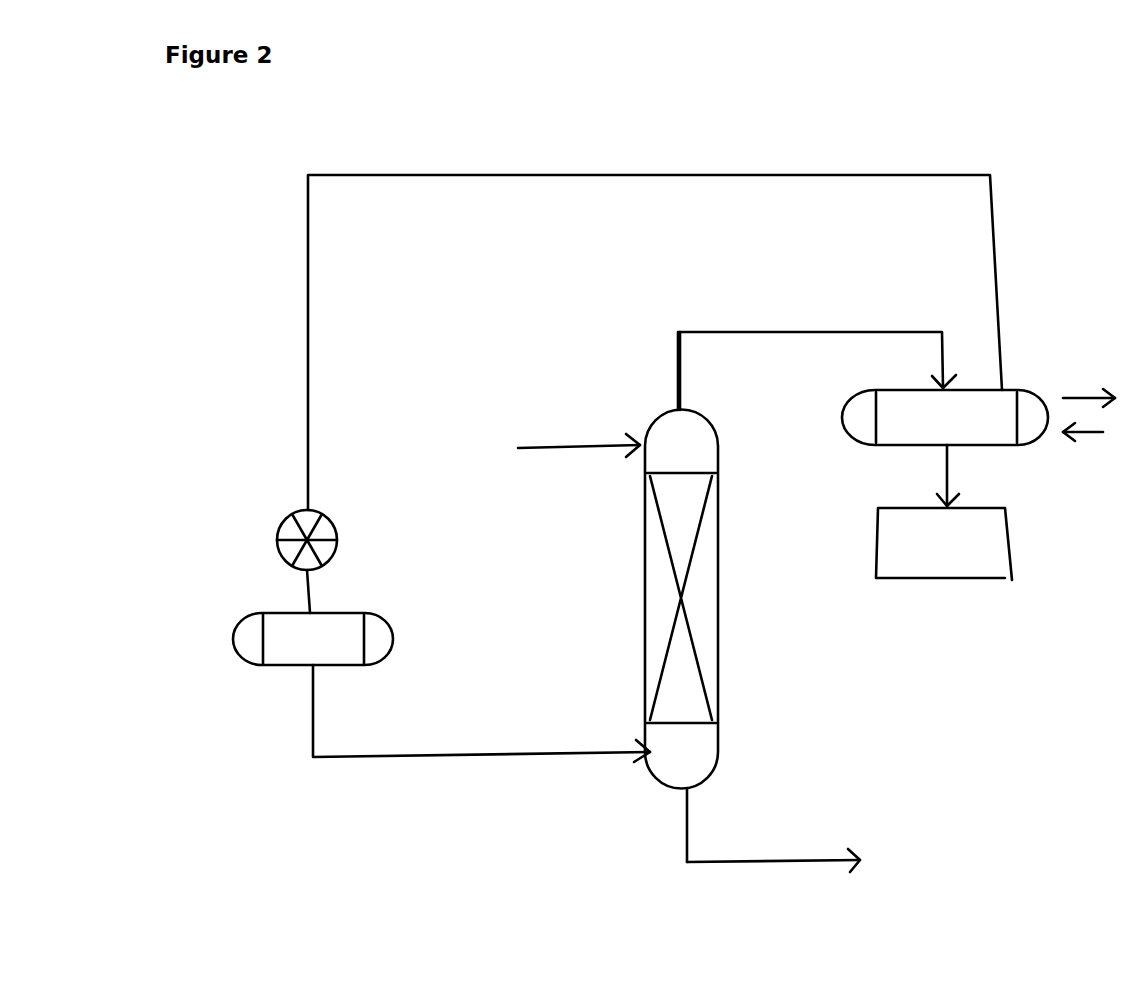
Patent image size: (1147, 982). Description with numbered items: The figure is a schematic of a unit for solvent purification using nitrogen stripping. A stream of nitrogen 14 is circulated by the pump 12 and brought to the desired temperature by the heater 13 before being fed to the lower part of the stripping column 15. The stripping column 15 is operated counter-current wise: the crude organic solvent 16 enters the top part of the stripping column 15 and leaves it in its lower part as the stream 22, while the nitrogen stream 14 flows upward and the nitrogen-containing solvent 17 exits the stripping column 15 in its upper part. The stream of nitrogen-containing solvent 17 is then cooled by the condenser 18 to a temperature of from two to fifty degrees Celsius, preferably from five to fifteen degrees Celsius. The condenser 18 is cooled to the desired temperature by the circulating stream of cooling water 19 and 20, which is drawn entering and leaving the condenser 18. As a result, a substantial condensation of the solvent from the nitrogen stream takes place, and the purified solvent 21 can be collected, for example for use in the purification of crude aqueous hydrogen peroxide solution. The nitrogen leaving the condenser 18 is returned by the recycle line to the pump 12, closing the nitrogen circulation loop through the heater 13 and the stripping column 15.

The pump 12 is at (285, 540).
The heater 13 is at (334, 639).
The stream of nitrogen 14 is at (481, 713).
The stripping column 15 is at (657, 597).
The crude organic solvent 16 is at (579, 429).
The nitrogen-containing solvent 17 is at (817, 348).
The condenser 18 is at (925, 417).
The cooling water stream 19 is at (1094, 379).
The cooling water stream 20 is at (1101, 451).
The purified solvent 21 is at (965, 512).
The stream exiting lower part of stripping column 22 is at (773, 845).